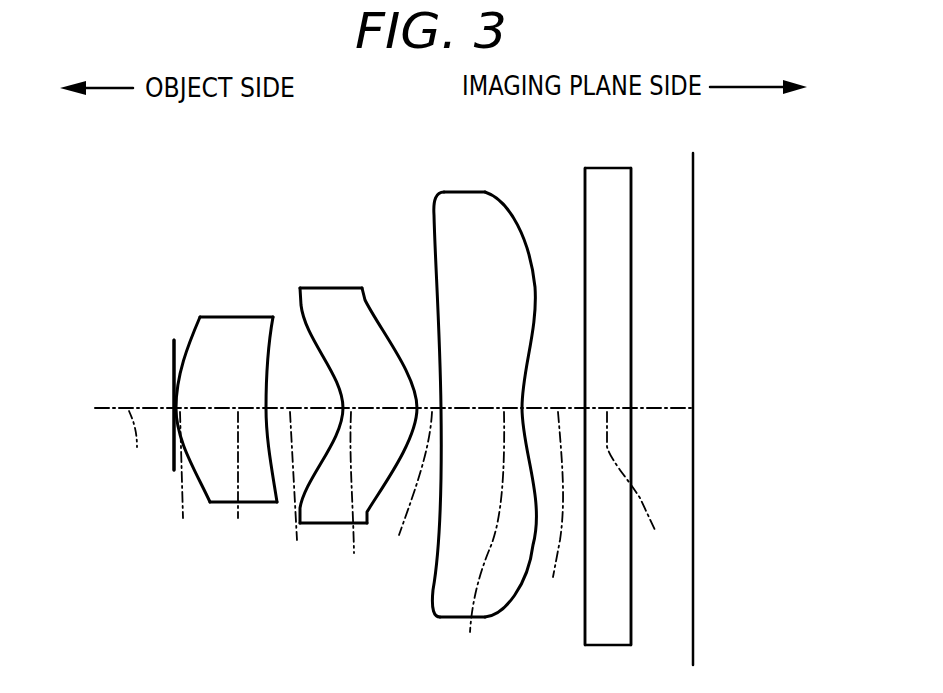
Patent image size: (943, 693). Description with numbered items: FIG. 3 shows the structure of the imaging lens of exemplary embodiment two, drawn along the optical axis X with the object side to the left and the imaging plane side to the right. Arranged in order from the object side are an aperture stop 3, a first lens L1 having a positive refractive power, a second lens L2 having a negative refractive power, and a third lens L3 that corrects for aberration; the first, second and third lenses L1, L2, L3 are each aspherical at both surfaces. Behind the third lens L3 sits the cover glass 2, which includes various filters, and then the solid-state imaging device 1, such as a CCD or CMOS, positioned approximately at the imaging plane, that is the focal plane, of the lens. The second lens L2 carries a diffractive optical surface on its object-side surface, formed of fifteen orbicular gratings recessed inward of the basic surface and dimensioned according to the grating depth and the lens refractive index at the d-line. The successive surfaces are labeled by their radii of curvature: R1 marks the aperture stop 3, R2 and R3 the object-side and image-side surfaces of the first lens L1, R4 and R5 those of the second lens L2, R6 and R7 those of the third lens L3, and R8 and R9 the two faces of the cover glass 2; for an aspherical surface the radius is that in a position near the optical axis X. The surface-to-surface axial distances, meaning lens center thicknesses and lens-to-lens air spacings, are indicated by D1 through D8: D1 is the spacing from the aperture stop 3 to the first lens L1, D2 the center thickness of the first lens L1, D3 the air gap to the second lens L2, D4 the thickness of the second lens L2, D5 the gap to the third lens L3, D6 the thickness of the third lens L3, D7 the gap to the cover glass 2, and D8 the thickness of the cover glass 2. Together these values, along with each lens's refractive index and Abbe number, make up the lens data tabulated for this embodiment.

The solid-state imaging device 1 is at (693, 156).
The cover glass 2 is at (603, 382).
The aperture stop 3 is at (174, 341).
The first lens L1 is at (239, 377).
The second lens L2 is at (356, 378).
The third lens L3 is at (492, 378).
The radius of curvature of first surface R1 is at (172, 352).
The radius of curvature of second surface R2 is at (182, 396).
The radius of curvature of third surface R3 is at (268, 405).
The radius of curvature of fourth surface R4 is at (342, 407).
The radius of curvature of fifth surface R5 is at (413, 380).
The radius of curvature of sixth surface R6 is at (438, 404).
The radius of curvature of seventh surface R7 is at (527, 405).
The radius of curvature of eighth surface R8 is at (584, 197).
The radius of curvature of ninth surface R9 is at (632, 198).
The surface-to-surface axial distance D1 is at (191, 480).
The surface-to-surface axial distance D2 is at (238, 480).
The surface-to-surface axial distance D3 is at (295, 493).
The surface-to-surface axial distance D4 is at (353, 501).
The surface-to-surface axial distance D5 is at (412, 491).
The surface-to-surface axial distance D6 is at (484, 543).
The surface-to-surface axial distance D7 is at (558, 512).
The surface-to-surface axial distance D8 is at (643, 489).
The optical axis X is at (138, 445).